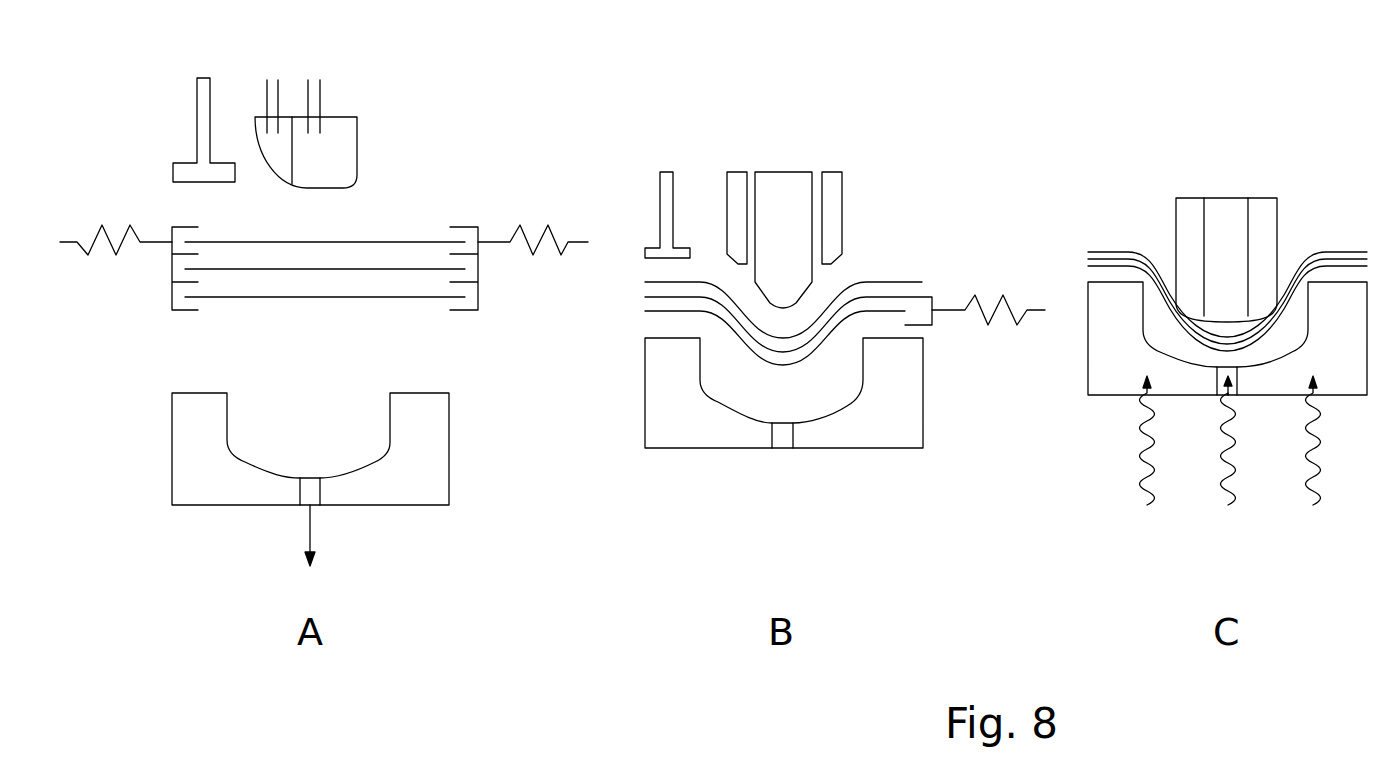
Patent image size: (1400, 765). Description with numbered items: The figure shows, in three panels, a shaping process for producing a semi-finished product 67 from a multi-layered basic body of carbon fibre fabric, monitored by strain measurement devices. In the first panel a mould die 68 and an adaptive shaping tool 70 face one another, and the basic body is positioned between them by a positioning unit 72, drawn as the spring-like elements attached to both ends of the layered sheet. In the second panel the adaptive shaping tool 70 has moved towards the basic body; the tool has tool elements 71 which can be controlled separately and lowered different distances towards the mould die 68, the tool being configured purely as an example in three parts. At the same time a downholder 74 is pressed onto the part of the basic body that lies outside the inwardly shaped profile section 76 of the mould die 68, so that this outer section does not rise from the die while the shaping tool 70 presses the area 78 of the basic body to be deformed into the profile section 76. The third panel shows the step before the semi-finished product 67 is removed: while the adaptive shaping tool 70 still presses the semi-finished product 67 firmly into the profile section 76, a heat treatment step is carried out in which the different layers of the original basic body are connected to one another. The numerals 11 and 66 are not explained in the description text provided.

The sheet material 11 is at (226, 241).
The outer layer of sheet 66 is at (1318, 256).
The semi-finished product 67 is at (1165, 282).
The mould die 68 is at (183, 435).
The adaptive shaping tool 70 is at (375, 130).
The tool elements 71 is at (740, 172).
The positioning unit 72 is at (528, 230).
The downholder 74 is at (677, 192).
The profile section 76 is at (358, 448).
The area to be deformed 78 is at (815, 350).